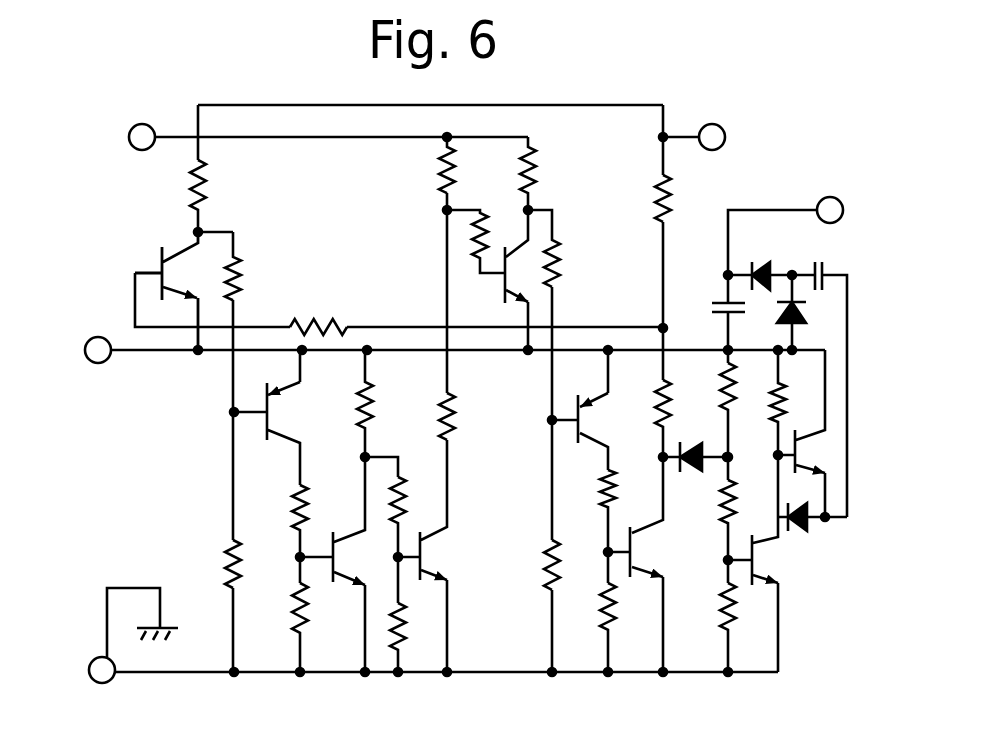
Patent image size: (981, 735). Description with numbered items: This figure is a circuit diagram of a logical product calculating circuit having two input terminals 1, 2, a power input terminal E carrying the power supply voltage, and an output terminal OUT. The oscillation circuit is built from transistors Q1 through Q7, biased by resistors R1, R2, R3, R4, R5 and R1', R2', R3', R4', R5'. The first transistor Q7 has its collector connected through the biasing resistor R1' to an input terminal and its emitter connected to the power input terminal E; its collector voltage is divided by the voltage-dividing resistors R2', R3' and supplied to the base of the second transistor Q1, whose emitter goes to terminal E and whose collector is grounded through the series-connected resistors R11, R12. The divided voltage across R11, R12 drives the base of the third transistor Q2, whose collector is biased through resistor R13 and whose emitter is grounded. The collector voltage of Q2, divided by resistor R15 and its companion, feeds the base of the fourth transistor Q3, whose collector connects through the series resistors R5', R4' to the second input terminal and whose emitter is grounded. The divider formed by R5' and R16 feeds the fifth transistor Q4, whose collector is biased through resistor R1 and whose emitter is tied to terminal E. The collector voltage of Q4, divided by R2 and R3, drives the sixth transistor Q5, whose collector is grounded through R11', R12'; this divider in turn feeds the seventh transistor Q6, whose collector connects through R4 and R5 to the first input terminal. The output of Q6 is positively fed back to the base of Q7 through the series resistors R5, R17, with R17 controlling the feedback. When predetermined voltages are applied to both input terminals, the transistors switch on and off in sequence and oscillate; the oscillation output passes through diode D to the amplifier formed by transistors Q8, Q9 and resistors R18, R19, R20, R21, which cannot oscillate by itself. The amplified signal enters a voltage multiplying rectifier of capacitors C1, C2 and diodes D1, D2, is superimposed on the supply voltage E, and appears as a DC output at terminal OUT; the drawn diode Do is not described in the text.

The input terminal 1 is at (142, 121).
The input terminal 2 is at (712, 121).
The power input terminal E is at (107, 361).
The output terminal OUT is at (795, 235).
The biasing resistor R1' is at (219, 196).
The voltage-dividing resistor R2' is at (254, 266).
The voltage-dividing resistor R3' is at (210, 538).
The series-connected resistor R4' is at (419, 173).
The series-connected resistor R5' is at (465, 416).
The series-connected resistor R11' is at (629, 526).
The series-connected resistor R12' is at (627, 627).
The bias resistor R1 is at (552, 174).
The resistor R2 is at (560, 248).
The resistor R3 is at (530, 578).
The biasing resistor R4 is at (684, 177).
The biasing resistor R5 is at (639, 420).
The series-connected resistor R11 is at (321, 534).
The series-connected resistor R12 is at (316, 627).
The biasing resistor R13 is at (398, 412).
The resistor R15 is at (410, 628).
The resistor R16 is at (492, 229).
The feedback resistance R17 is at (340, 316).
The resistor R18 is at (718, 387).
The resistor R19 is at (740, 488).
The resistor R20 is at (740, 607).
The resistor R21 is at (803, 388).
The second transistor Q1 is at (267, 417).
The third transistor Q2 is at (350, 564).
The fourth transistor Q3 is at (442, 556).
The fifth transistor Q4 is at (496, 280).
The sixth transistor Q5 is at (578, 410).
The seventh transistor Q6 is at (653, 564).
The first transistor Q7 is at (158, 291).
The transistor Q8 is at (773, 594).
The transistor Q9 is at (813, 435).
The diode D is at (697, 443).
The diode D1 is at (807, 312).
The diode D2 is at (771, 263).
The output diode Do is at (812, 532).
The capacitor C1 is at (832, 379).
The capacitor C2 is at (711, 317).